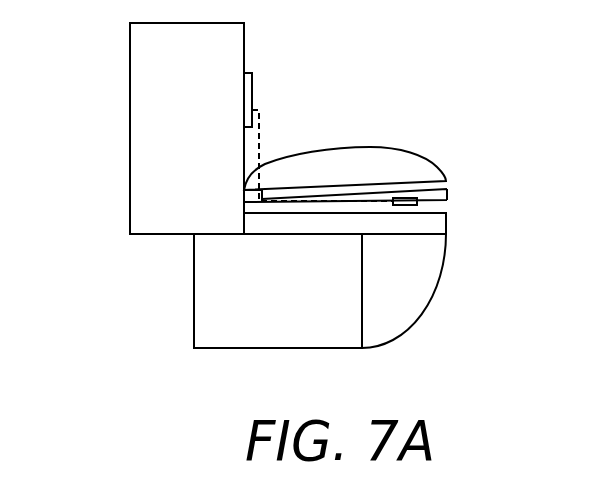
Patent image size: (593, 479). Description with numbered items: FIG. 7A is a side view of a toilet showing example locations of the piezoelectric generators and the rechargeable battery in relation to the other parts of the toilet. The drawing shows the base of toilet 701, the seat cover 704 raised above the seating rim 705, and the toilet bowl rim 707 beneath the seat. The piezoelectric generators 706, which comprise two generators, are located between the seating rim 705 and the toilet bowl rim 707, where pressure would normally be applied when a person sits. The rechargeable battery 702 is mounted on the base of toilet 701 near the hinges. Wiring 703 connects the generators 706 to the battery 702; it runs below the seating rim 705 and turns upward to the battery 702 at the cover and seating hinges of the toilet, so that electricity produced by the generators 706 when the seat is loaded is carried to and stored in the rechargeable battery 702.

The base of toilet 701 is at (142, 123).
The rechargeable battery 702 is at (255, 88).
The wiring 703 is at (260, 131).
The seat cover 704 is at (407, 148).
The seating rim 705 is at (447, 181).
The piezoelectric generators 706 is at (418, 202).
The toilet bowl rim 707 is at (447, 223).